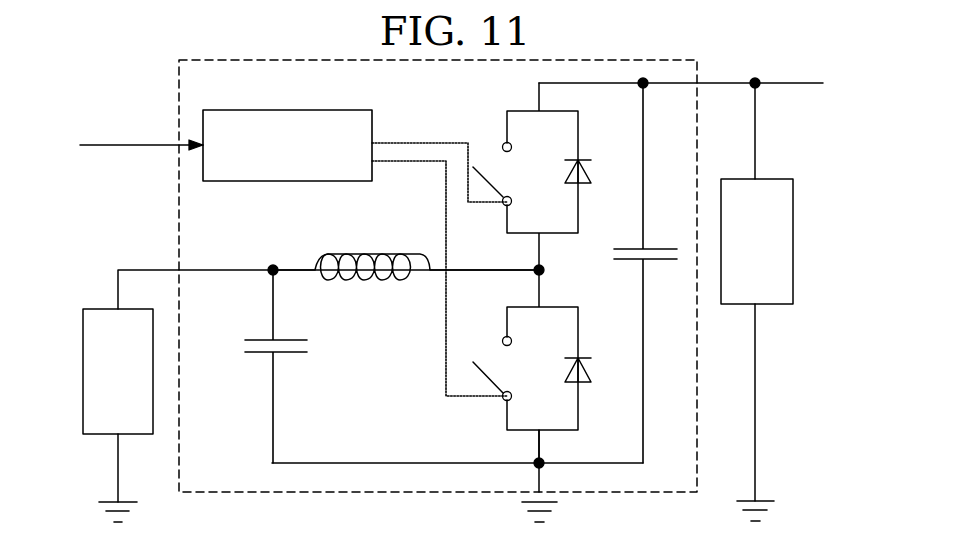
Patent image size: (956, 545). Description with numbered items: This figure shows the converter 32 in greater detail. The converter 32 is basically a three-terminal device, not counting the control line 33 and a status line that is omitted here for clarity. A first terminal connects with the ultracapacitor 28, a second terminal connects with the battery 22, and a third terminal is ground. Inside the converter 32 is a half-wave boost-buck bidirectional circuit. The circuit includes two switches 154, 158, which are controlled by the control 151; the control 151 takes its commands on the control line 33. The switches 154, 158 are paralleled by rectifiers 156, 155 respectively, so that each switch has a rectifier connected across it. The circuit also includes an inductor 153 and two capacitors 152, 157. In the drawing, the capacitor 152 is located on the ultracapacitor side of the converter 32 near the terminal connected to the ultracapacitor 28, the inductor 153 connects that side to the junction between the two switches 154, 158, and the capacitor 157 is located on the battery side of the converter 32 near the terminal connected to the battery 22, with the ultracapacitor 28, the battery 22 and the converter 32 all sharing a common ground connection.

The battery 22 is at (793, 228).
The ultracapacitor 28 is at (83, 363).
The converter 32 is at (390, 493).
The control line 33 is at (143, 143).
The control 151 is at (298, 110).
The capacitor 152 is at (285, 354).
The inductor 153 is at (400, 252).
The switch 154 is at (503, 398).
The rectifier 155 is at (591, 380).
The rectifier 156 is at (591, 180).
The capacitor 157 is at (625, 262).
The switch 158 is at (502, 145).